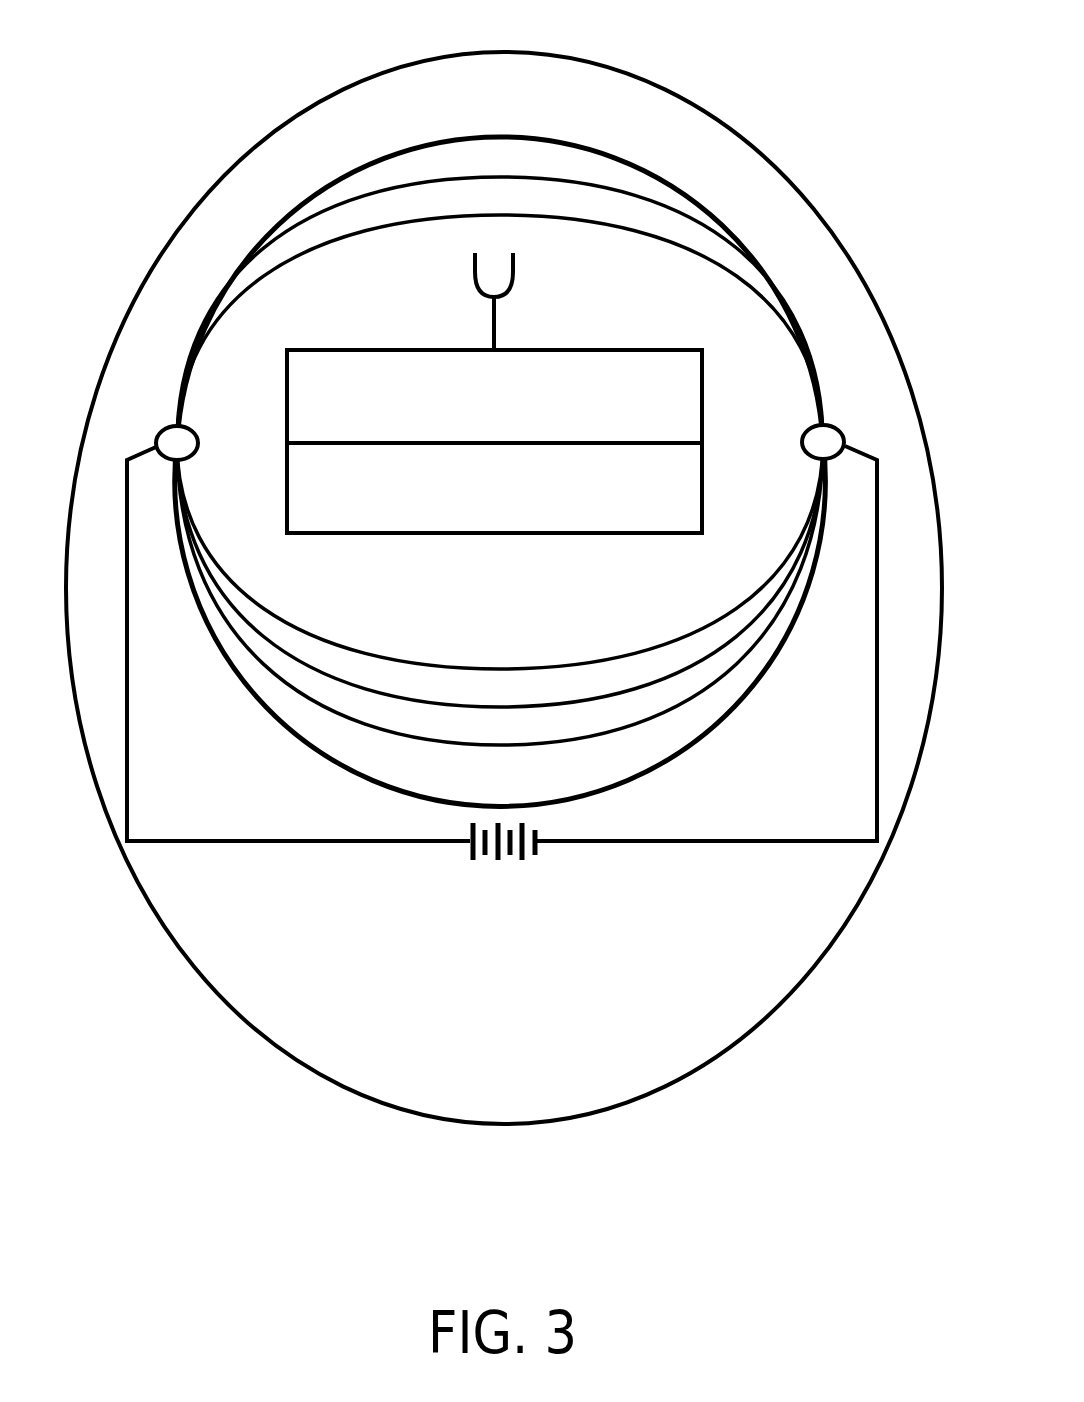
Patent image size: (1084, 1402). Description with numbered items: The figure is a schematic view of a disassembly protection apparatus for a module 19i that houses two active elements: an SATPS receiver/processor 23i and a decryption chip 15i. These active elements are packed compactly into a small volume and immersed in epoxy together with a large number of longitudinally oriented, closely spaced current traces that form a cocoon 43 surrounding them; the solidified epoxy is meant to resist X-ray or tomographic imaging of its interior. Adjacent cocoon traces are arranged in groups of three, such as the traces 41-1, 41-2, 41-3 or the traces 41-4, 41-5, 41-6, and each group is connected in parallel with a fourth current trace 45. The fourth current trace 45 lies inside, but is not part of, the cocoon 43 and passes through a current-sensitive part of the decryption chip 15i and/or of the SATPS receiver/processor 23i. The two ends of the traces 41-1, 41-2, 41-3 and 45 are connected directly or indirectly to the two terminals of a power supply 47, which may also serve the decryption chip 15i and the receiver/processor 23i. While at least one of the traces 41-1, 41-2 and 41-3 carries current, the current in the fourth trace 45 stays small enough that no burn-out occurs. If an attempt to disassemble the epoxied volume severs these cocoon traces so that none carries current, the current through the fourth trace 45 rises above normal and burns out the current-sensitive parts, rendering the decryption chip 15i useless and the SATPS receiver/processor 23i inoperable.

The cocoon 43 is at (726, 74).
The current trace 41-1 is at (420, 667).
The current trace 41-2 is at (428, 703).
The current trace 41-3 is at (420, 738).
The current trace 41-4 is at (472, 138).
The current trace 41-5 is at (527, 175).
The current trace 41-6 is at (573, 217).
The fourth current trace 45 is at (215, 646).
The power supply 47 is at (523, 876).
The module 19i is at (501, 441).
The SATPS receiver/processor 23i is at (305, 425).
The decryption chip 15i is at (305, 512).